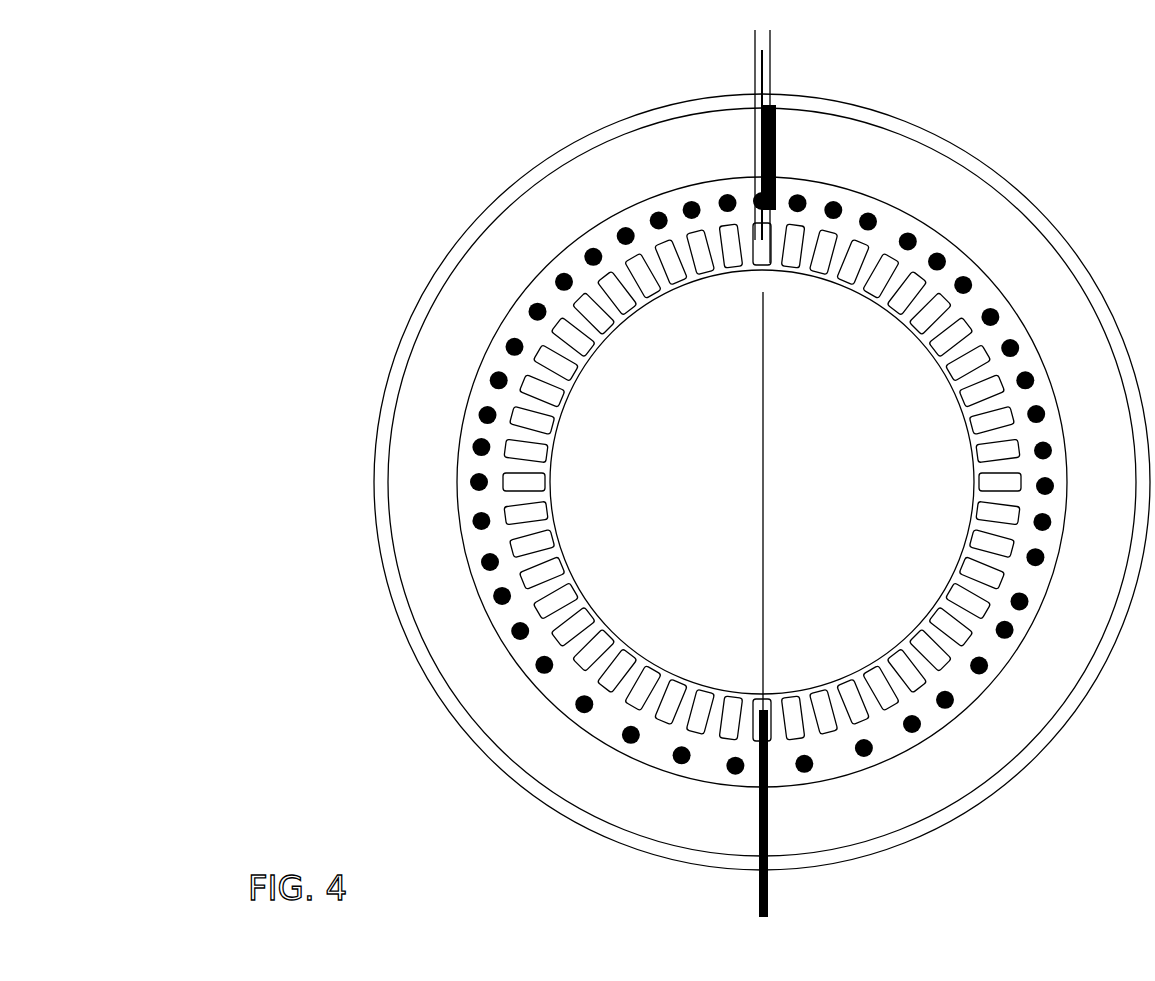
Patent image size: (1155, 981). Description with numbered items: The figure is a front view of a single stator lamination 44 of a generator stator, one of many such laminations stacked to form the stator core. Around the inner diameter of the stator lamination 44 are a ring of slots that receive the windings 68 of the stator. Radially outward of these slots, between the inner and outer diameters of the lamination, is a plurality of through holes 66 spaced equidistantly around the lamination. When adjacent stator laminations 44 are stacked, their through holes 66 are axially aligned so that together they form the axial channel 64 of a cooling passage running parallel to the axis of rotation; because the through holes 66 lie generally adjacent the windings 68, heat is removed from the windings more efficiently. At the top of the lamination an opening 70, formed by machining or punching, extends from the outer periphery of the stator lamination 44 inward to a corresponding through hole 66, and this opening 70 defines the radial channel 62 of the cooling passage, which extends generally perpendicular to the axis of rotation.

The stator lamination 44 is at (365, 192).
The windings 68 is at (763, 246).
The axial channel 64 is at (807, 449).
The through holes 66 is at (995, 312).
The opening 70 is at (842, 473).
The radial channel 62 is at (777, 148).